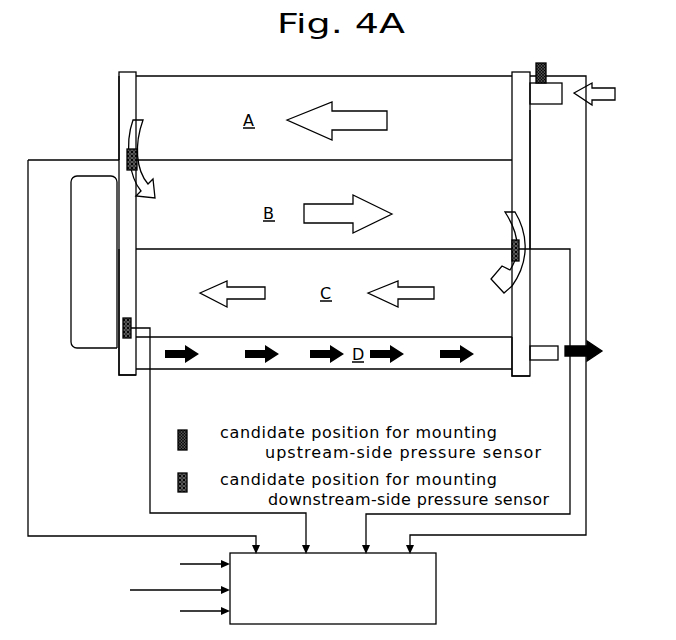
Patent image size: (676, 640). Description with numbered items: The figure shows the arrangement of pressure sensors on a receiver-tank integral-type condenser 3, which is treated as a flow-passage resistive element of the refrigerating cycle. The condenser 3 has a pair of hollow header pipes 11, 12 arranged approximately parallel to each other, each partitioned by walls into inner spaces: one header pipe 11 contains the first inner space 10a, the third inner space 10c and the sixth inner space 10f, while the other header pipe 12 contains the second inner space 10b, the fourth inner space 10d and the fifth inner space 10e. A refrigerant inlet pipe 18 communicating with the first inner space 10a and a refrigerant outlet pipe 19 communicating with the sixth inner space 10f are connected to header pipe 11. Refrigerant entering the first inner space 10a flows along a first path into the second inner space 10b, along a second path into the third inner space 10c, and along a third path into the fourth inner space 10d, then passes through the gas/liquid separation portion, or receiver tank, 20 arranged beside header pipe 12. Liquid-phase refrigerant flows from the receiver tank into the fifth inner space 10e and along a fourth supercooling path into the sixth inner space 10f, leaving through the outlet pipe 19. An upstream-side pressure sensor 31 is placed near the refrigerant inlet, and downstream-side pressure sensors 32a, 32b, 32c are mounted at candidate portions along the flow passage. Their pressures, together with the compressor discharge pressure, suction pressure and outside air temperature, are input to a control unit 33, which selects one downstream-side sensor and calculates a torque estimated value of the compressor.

The condenser 3 is at (432, 66).
The first inner space 10a is at (522, 143).
The second inner space 10b is at (128, 102).
The third inner space 10c is at (526, 194).
The fourth inner space 10d is at (128, 282).
The fifth inner space 10e is at (125, 378).
The sixth inner space 10f is at (523, 380).
The header pipe 11 is at (520, 72).
The header pipe 12 is at (128, 72).
The refrigerant inlet pipe 18 is at (547, 97).
The refrigerant outlet pipe 19 is at (543, 360).
The gas/liquid separation portion (receiver tank) 20 is at (88, 340).
The upstream-side pressure sensor 31 is at (541, 63).
The downstream-side pressure sensor 32a is at (127, 154).
The downstream-side pressure sensor 32b is at (519, 249).
The downstream-side pressure sensor 32c is at (123, 323).
The control unit 33 is at (436, 590).